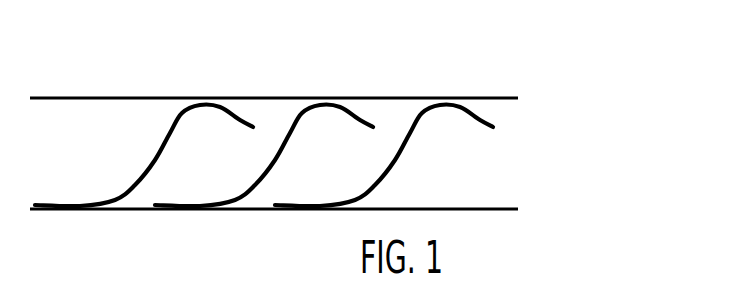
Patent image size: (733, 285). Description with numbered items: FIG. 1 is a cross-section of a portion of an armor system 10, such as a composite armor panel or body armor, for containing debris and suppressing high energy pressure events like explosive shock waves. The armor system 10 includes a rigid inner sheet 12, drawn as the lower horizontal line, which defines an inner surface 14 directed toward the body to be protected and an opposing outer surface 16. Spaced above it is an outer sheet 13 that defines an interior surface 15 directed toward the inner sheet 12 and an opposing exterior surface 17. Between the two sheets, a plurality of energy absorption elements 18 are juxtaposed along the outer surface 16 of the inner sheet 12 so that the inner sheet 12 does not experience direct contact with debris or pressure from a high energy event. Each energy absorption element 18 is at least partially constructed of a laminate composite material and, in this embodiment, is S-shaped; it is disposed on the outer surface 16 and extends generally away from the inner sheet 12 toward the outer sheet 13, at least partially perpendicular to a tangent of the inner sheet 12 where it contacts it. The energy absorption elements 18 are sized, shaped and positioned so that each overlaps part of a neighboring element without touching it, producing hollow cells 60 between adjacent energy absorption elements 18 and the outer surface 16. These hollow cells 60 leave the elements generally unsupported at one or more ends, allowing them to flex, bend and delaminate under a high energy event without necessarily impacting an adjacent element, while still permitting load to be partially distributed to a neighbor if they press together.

The armor system 10 is at (643, 68).
The inner sheet 12 is at (527, 208).
The outer sheet 13 is at (527, 97).
The inner surface 14 is at (490, 211).
The interior surface 15 is at (497, 100).
The outer surface 16 is at (490, 207).
The exterior surface 17 is at (497, 97).
The energy absorption elements 18 is at (140, 155).
The hollow cells 60 is at (328, 157).